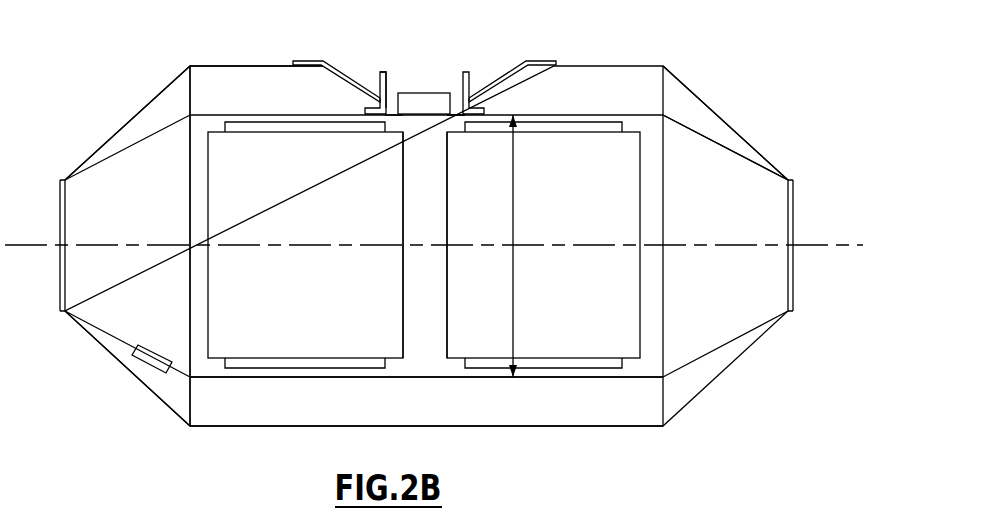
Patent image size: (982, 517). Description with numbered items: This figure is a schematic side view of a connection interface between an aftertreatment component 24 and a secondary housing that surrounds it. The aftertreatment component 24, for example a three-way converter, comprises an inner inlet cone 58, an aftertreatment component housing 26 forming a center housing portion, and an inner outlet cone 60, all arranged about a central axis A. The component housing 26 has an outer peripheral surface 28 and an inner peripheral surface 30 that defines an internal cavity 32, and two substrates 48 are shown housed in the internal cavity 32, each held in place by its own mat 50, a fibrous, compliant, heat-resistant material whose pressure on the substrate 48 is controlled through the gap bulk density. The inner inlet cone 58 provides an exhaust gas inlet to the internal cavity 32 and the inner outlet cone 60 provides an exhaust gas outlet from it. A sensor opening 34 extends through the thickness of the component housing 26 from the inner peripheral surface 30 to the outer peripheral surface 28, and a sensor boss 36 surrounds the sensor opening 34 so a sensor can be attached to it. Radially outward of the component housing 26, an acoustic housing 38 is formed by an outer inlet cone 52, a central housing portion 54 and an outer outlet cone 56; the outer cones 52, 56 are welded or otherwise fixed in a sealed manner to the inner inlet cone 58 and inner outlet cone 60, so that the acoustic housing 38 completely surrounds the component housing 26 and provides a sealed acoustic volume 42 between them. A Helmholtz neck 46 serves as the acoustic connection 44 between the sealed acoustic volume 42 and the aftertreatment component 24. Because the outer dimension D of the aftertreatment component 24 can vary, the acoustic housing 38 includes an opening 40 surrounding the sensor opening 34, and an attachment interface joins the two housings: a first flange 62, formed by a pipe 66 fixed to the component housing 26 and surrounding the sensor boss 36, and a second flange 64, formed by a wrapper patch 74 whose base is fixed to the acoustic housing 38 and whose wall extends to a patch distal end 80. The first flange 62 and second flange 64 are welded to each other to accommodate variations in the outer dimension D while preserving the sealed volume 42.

The aftertreatment component 24 is at (642, 379).
The aftertreatment component housing 26 is at (623, 112).
The outer peripheral surface 28 is at (537, 378).
The inner peripheral surface 30 is at (440, 378).
The internal cavity 32 is at (420, 352).
The sensor opening 34 is at (398, 115).
The sensor boss 36 is at (419, 93).
The acoustic housing 38 is at (739, 128).
The opening 40 is at (457, 105).
The sealed acoustic volume 42 is at (233, 83).
The acoustic connection 44 is at (170, 384).
The Helmholtz neck 46 is at (140, 360).
The substrate 48 is at (253, 336).
The mat 50 is at (283, 364).
The outer inlet cone 52 is at (128, 122).
The central housing portion 54 is at (257, 66).
The outer outlet cone 56 is at (764, 156).
The inner inlet cone 58 is at (112, 155).
The inner outlet cone 60 is at (692, 128).
The first flange 62 is at (387, 81).
The second flange 64 is at (475, 78).
The pipe 66 is at (467, 88).
The wrapper patch 74 is at (352, 78).
The patch distal end 80 is at (379, 88).
The central axis A is at (817, 244).
The outer dimension D is at (513, 288).